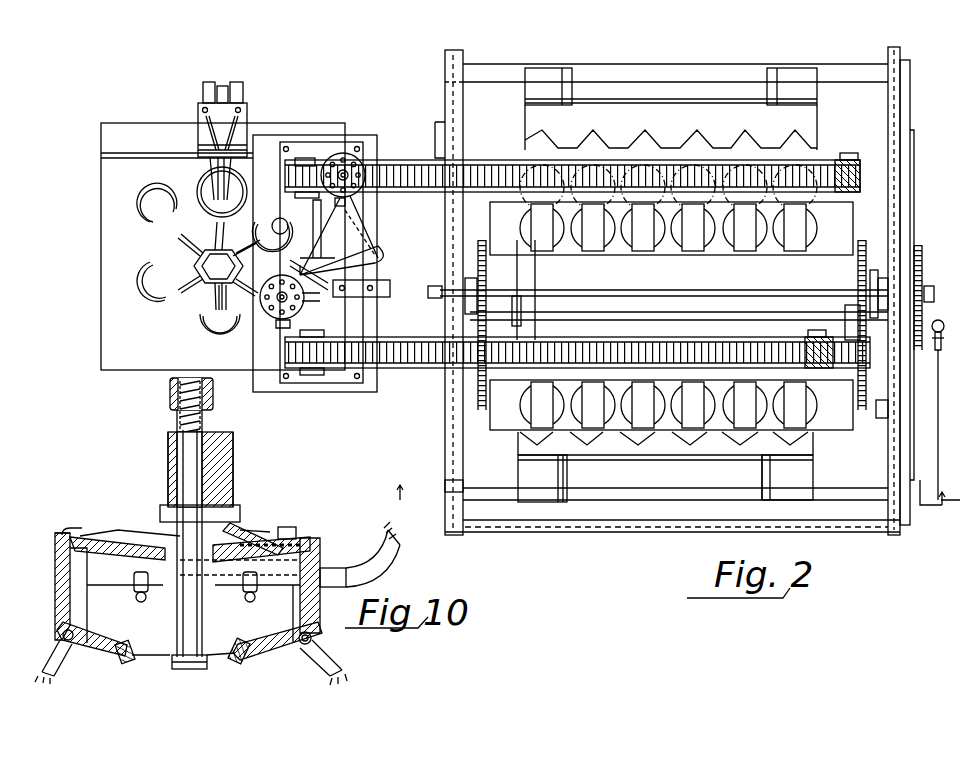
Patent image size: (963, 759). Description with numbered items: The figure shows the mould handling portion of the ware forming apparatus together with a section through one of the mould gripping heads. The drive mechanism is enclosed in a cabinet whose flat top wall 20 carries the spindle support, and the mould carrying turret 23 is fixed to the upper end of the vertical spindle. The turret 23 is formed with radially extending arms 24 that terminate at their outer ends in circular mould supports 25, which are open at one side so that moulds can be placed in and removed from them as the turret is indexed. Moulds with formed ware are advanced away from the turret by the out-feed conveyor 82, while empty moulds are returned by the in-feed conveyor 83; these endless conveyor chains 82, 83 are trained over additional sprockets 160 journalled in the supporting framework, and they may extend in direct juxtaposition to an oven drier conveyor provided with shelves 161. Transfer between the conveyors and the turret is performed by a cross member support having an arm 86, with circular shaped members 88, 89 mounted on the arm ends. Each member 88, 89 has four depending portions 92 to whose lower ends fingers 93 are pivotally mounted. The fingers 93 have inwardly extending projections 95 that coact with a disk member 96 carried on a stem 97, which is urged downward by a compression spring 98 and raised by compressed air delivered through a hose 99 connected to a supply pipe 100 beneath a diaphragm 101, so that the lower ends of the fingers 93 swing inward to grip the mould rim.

In FIG. 2, the flat top wall 20 is at (223, 246).
In FIG. 2, the mould carrying turret 23 is at (219, 266).
In FIG. 2, the radially extending arms 24 is at (226, 300).
In FIG. 2, the circular mould supports 25 is at (154, 270).
In FIG. 2, the out-feed conveyor 82 is at (405, 160).
In FIG. 2, the in-feed conveyor 83 is at (400, 340).
In FIG. 2, the arm 86 is at (356, 220).
In FIG. 2, the circular shaped member 88 is at (345, 153).
In FIG. 2, the circular shaped member 89 is at (272, 320).
In FIG. 10, the circular shaped member 89 is at (320, 548).
In FIG. 10, the depending portions 92 is at (57, 598).
In FIG. 10, the fingers 93 is at (60, 662).
In FIG. 10, the inwardly extending projections 95 is at (132, 645).
In FIG. 10, the disk member 96 is at (225, 655).
In FIG. 10, the stem 97 is at (205, 620).
In FIG. 10, the compression spring 98 is at (233, 458).
In FIG. 10, the hose 99 is at (390, 540).
In FIG. 10, the supply pipe 100 is at (255, 590).
In FIG. 10, the diaphragm 101 is at (240, 558).
In FIG. 2, the sprockets 160 is at (850, 168).
In FIG. 2, the shelves 161 is at (667, 254).